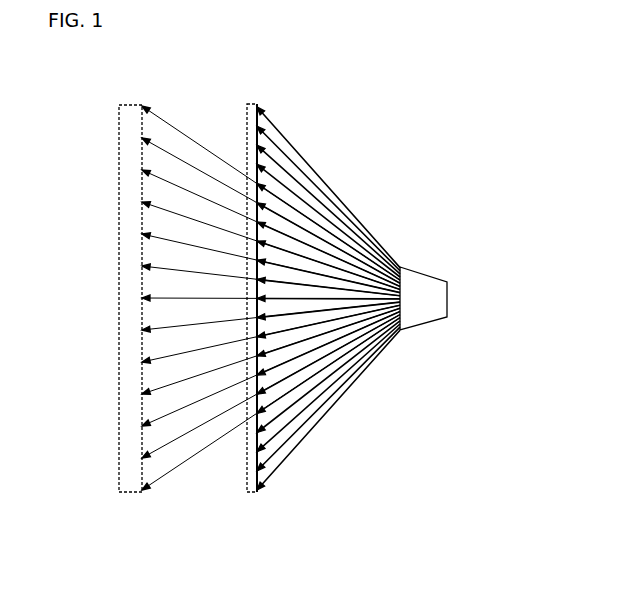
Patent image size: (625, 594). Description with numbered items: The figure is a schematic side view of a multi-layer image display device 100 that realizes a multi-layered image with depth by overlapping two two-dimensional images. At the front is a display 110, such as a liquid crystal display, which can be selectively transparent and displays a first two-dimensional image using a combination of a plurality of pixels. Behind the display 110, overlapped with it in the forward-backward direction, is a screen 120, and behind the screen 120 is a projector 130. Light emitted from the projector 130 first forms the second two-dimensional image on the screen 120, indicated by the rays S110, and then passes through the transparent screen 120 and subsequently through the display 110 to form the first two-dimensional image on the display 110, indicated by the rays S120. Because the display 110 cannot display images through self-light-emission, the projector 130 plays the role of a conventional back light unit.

The multi-layer image display device 100 is at (370, 147).
The display 110 is at (119, 468).
The screen 120 is at (247, 468).
The projector 130 is at (447, 315).
The second image forming step S110 is at (297, 153).
The first image forming step S120 is at (213, 153).